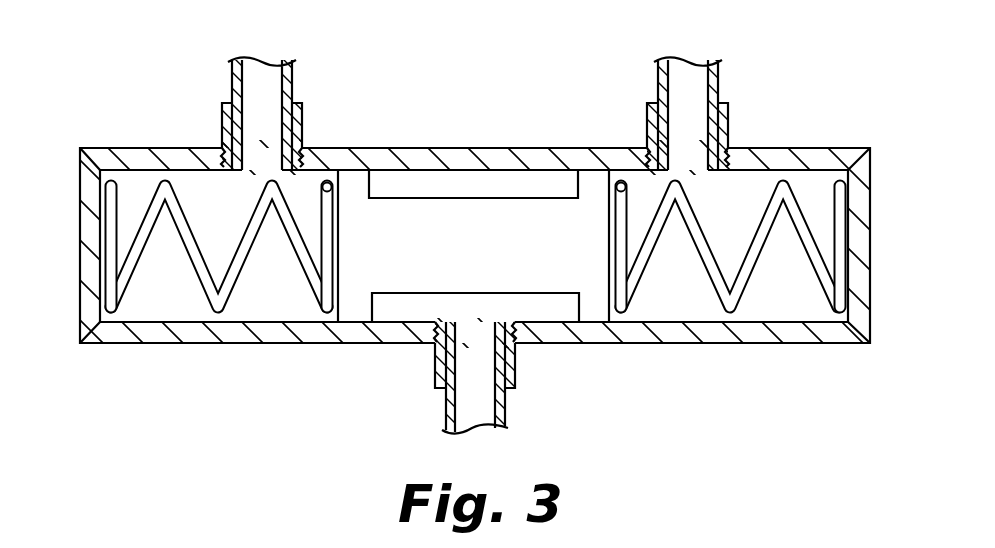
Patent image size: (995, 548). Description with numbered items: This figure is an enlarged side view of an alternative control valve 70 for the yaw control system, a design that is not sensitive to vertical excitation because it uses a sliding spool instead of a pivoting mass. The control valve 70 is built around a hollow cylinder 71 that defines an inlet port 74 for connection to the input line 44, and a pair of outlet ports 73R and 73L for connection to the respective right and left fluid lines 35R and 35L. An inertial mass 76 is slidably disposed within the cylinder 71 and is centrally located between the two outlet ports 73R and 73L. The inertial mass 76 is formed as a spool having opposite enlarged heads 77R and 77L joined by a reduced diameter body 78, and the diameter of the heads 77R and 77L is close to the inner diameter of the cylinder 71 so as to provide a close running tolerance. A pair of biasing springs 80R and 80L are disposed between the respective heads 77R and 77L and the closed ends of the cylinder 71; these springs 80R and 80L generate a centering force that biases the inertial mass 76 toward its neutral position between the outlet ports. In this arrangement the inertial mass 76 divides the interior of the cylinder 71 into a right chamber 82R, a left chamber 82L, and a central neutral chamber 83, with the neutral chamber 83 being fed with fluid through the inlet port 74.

The control valve 70 is at (484, 231).
The hollow cylinder 71 is at (865, 182).
The right fluid line 35R is at (292, 85).
The left fluid line 35L is at (718, 84).
The right outlet port 73R is at (222, 130).
The left outlet port 73L is at (728, 130).
The inlet port 74 is at (515, 366).
The input line 44 is at (446, 414).
The inertial mass 76 is at (502, 188).
The right enlarged head 77R is at (357, 178).
The left enlarged head 77L is at (594, 178).
The reduced diameter body 78 is at (407, 270).
The right biasing spring 80R is at (200, 280).
The left biasing spring 80L is at (745, 290).
The right chamber 82R is at (127, 203).
The left chamber 82L is at (793, 300).
The central neutral chamber 83 is at (440, 228).